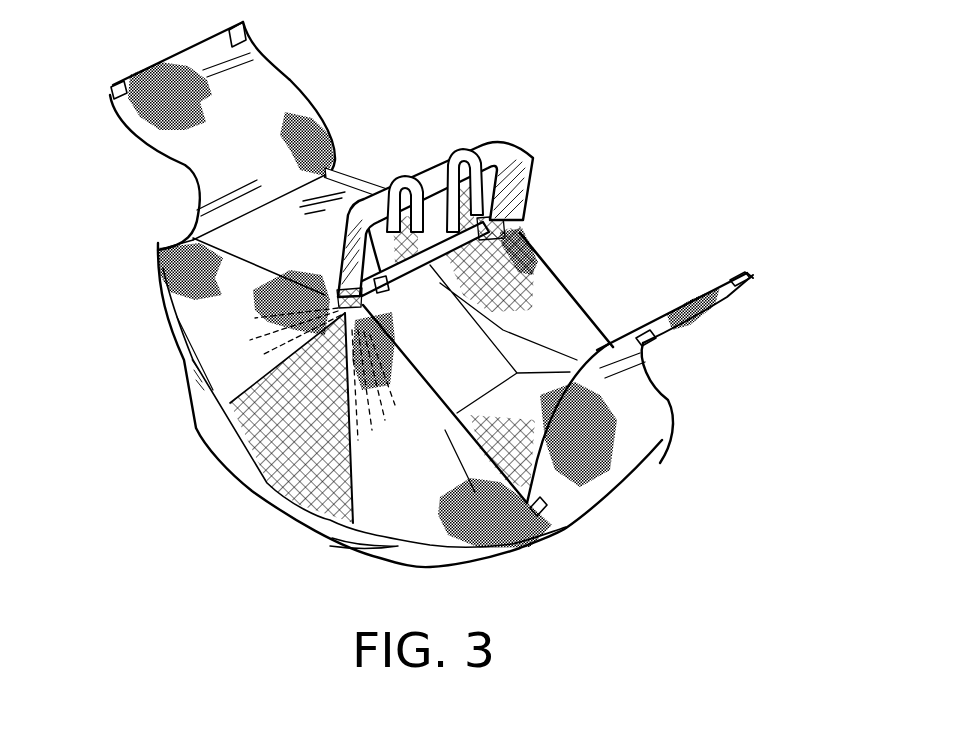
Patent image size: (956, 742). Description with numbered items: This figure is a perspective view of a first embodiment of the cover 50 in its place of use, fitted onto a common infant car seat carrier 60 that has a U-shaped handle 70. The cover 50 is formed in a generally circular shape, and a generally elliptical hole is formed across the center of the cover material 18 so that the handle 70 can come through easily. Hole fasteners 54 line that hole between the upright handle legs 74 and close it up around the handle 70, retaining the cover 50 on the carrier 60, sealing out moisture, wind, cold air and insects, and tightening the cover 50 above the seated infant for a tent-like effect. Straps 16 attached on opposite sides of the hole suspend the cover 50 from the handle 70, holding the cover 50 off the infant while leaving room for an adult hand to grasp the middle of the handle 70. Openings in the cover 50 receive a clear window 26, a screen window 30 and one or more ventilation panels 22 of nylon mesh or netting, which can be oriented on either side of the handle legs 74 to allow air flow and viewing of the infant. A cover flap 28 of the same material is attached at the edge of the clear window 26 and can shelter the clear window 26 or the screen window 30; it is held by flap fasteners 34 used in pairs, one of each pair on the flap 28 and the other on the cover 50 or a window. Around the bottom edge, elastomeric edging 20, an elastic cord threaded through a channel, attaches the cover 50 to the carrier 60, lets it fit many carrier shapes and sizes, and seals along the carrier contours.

The straps 16 is at (450, 157).
The cover material 18 is at (660, 410).
The elastomeric edging 20 is at (185, 351).
The ventilation panel 22 is at (260, 393).
The clear window 26 is at (365, 178).
The cover flap 28 is at (190, 167).
The screen window 30 is at (545, 302).
The flap fasteners 34 is at (113, 100).
The cover 50 is at (240, 332).
The hole fasteners 54 is at (350, 222).
The infant car seat carrier 60 is at (160, 395).
The handle 70 is at (430, 177).
The handle legs 74 is at (520, 190).